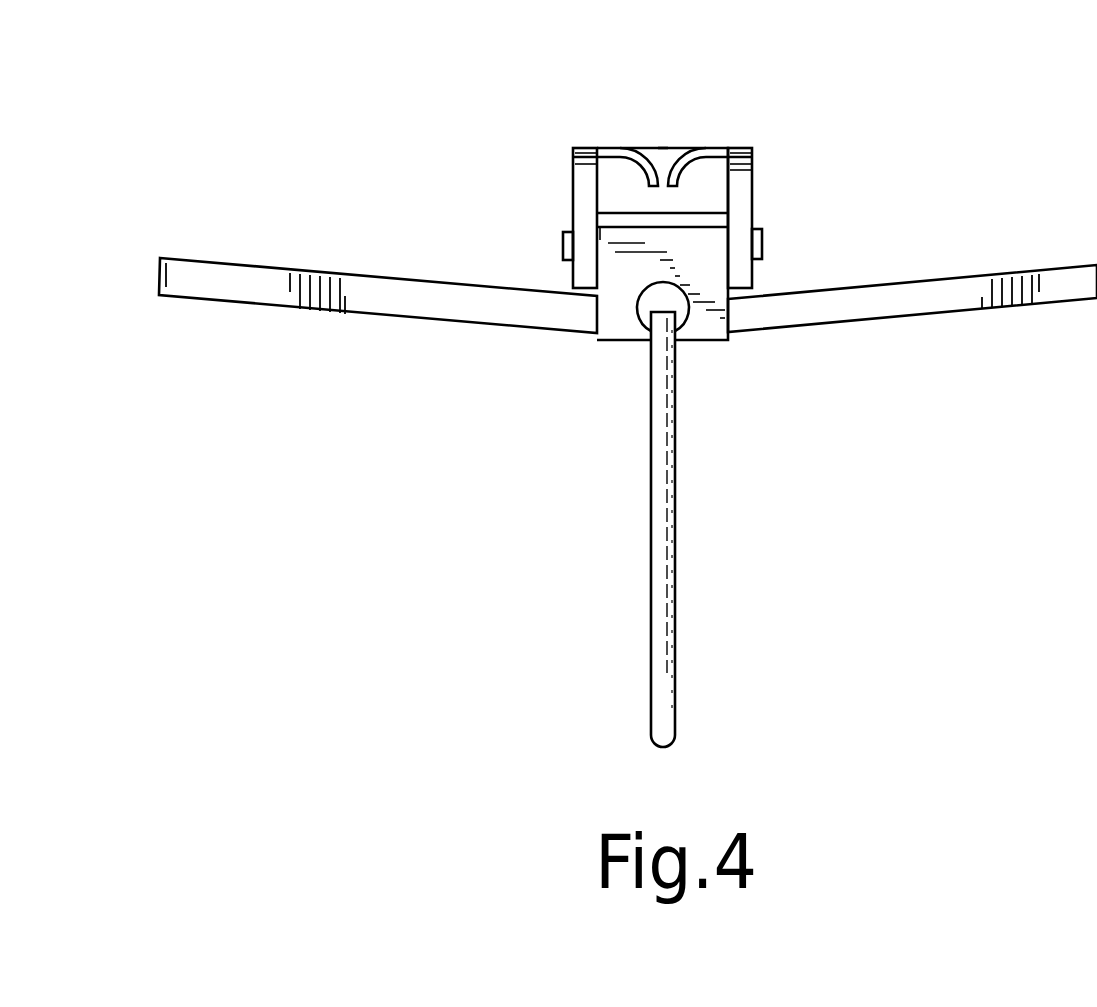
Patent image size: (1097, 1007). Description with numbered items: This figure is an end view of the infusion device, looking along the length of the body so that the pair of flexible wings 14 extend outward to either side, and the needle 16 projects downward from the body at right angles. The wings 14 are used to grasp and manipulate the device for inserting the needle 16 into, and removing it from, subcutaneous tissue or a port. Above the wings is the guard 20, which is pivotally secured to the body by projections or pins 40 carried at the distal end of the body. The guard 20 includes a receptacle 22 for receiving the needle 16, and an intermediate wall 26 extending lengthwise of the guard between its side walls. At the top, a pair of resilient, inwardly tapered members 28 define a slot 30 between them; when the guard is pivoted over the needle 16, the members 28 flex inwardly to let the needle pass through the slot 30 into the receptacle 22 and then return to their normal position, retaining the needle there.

The flexible wings 14 is at (432, 307).
The needle 16 is at (665, 435).
The guard 20 is at (623, 188).
The receptacle 22 is at (623, 308).
The intermediate wall 26 is at (700, 212).
The members 28 is at (692, 156).
The slot 30 is at (662, 170).
The pins 40 is at (565, 250).